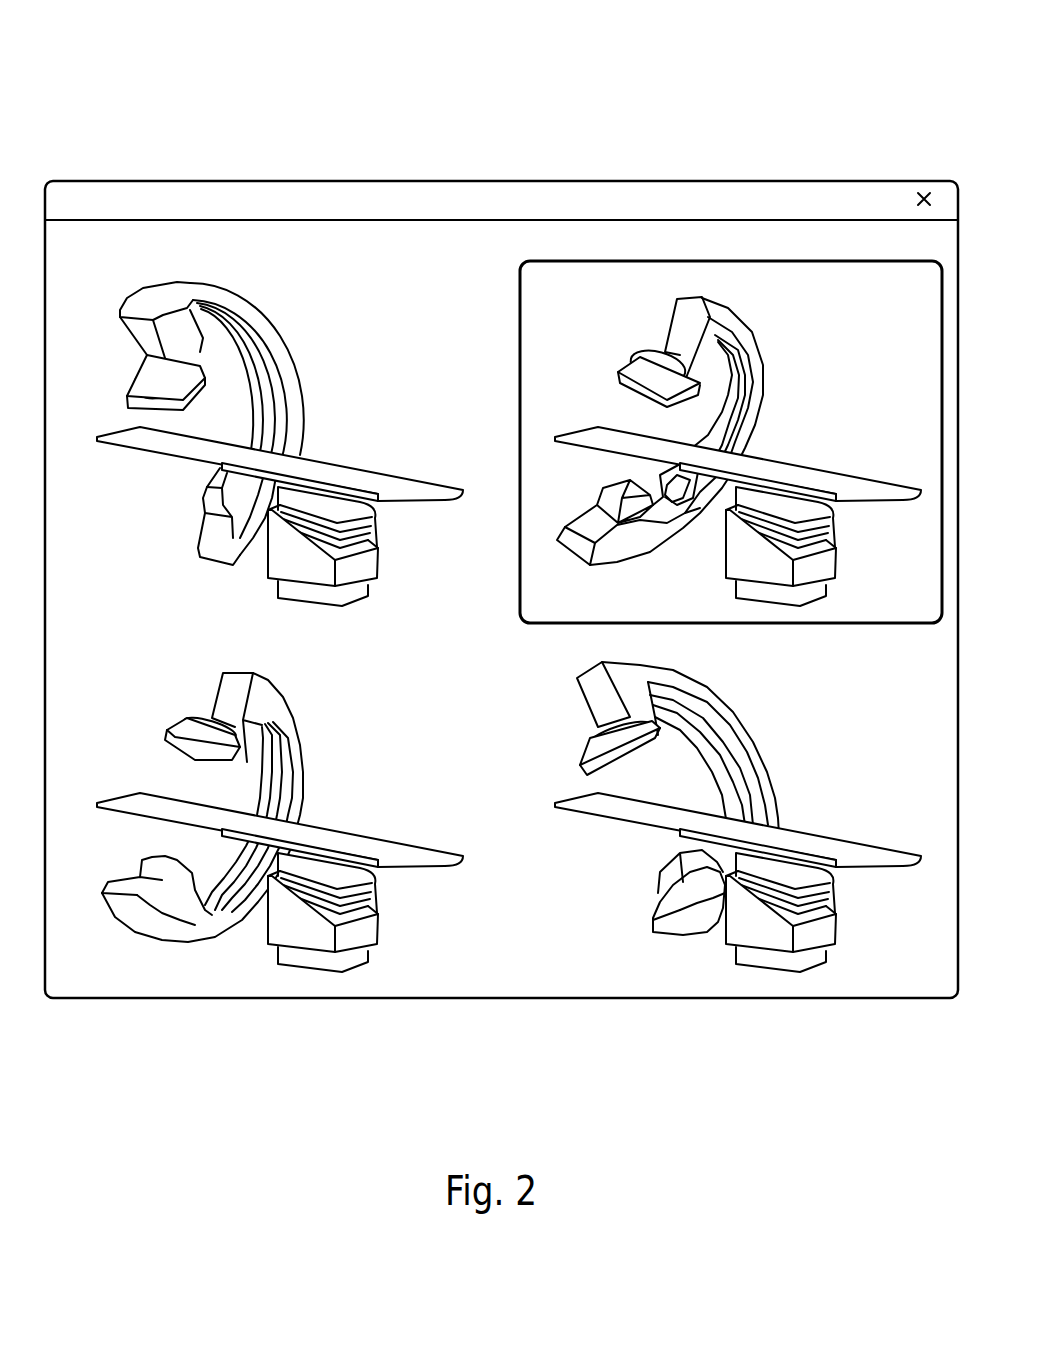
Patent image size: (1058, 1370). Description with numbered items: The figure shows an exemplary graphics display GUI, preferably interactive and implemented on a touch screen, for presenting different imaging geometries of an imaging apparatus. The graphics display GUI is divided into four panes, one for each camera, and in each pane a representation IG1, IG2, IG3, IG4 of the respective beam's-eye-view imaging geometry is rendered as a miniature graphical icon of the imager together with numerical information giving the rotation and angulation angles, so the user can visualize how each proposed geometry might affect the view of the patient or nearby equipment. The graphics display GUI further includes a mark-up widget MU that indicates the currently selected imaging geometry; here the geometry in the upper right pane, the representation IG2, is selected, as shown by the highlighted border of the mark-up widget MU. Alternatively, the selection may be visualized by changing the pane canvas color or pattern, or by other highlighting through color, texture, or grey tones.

The graphics display GUI is at (501, 510).
The representation of BEV imaging geometry IG1 is at (283, 342).
The representation of BEV imaging geometry IG2 is at (738, 344).
The representation of BEV imaging geometry IG3 is at (283, 884).
The representation of BEV imaging geometry IG4 is at (738, 879).
The mark-up widget MU is at (731, 373).